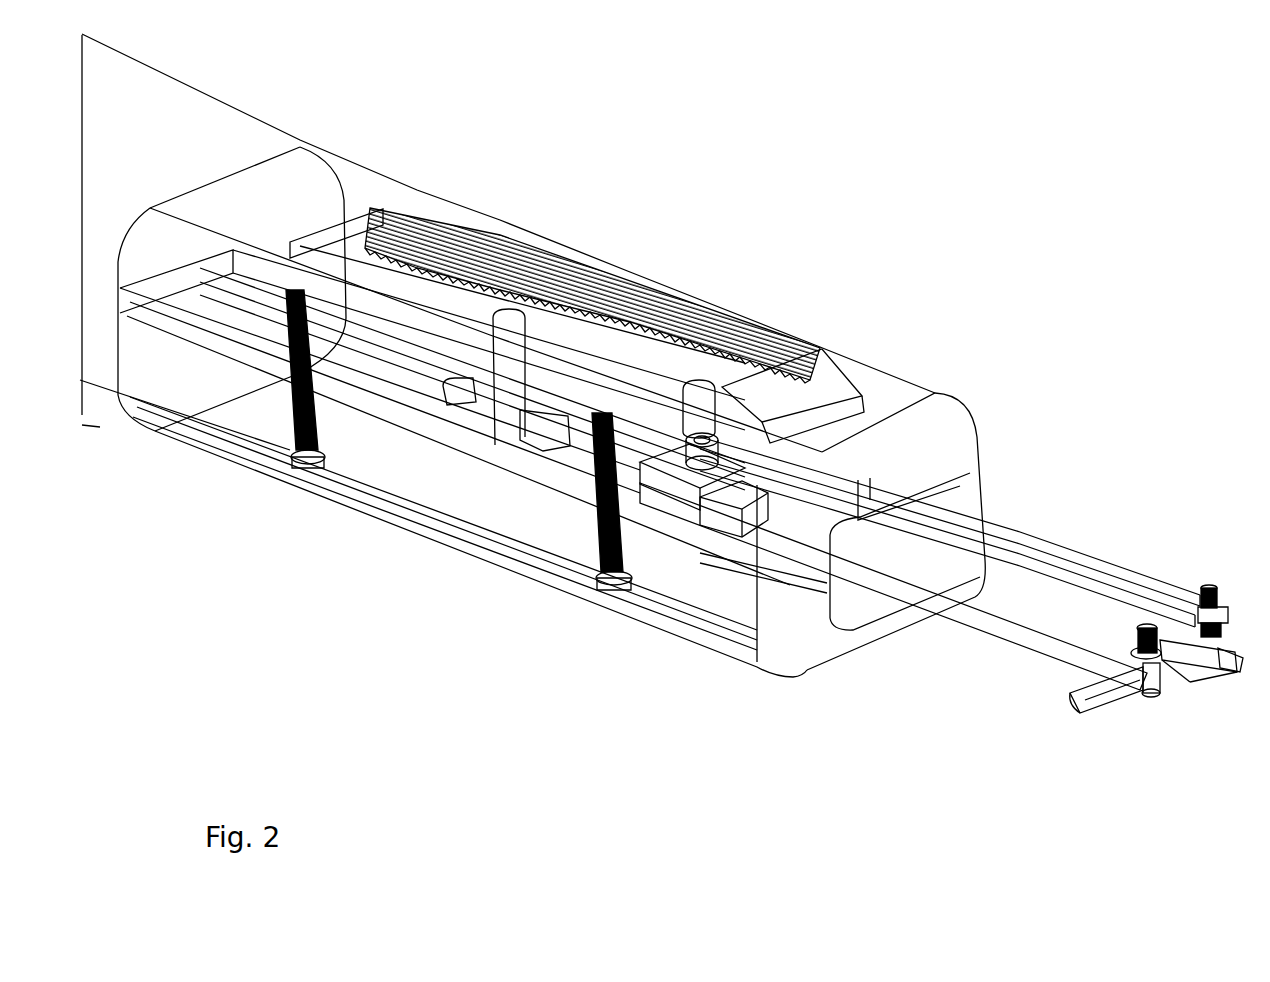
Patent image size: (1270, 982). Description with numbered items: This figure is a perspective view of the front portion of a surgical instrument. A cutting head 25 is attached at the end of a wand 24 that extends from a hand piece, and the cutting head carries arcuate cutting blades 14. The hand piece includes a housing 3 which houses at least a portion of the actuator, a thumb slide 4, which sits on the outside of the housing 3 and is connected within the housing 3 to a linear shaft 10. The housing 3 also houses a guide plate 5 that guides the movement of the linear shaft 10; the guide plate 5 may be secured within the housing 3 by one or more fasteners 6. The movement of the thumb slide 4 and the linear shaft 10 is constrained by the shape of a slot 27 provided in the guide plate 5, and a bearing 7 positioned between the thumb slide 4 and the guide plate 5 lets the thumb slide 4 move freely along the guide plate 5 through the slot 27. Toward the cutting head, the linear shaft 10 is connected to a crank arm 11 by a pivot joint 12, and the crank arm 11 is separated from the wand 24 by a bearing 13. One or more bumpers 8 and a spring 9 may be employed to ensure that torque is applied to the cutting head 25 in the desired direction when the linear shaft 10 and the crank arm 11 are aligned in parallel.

The housing 3 is at (224, 480).
The thumb slide 4 is at (711, 287).
The guide plate 5 is at (540, 482).
The fasteners 6 is at (587, 552).
The bearing 7 is at (671, 509).
The bumpers 8 is at (729, 549).
The spring 9 is at (891, 479).
The linear shaft 10 is at (1031, 513).
The crank arm 11 is at (1156, 606).
The pivot joint 12 is at (1198, 566).
The bearing 13 is at (1185, 673).
The cutting blade 14 is at (1065, 729).
The wand 24 is at (965, 651).
The cutting head 25 is at (1165, 719).
The slot 27 is at (463, 417).